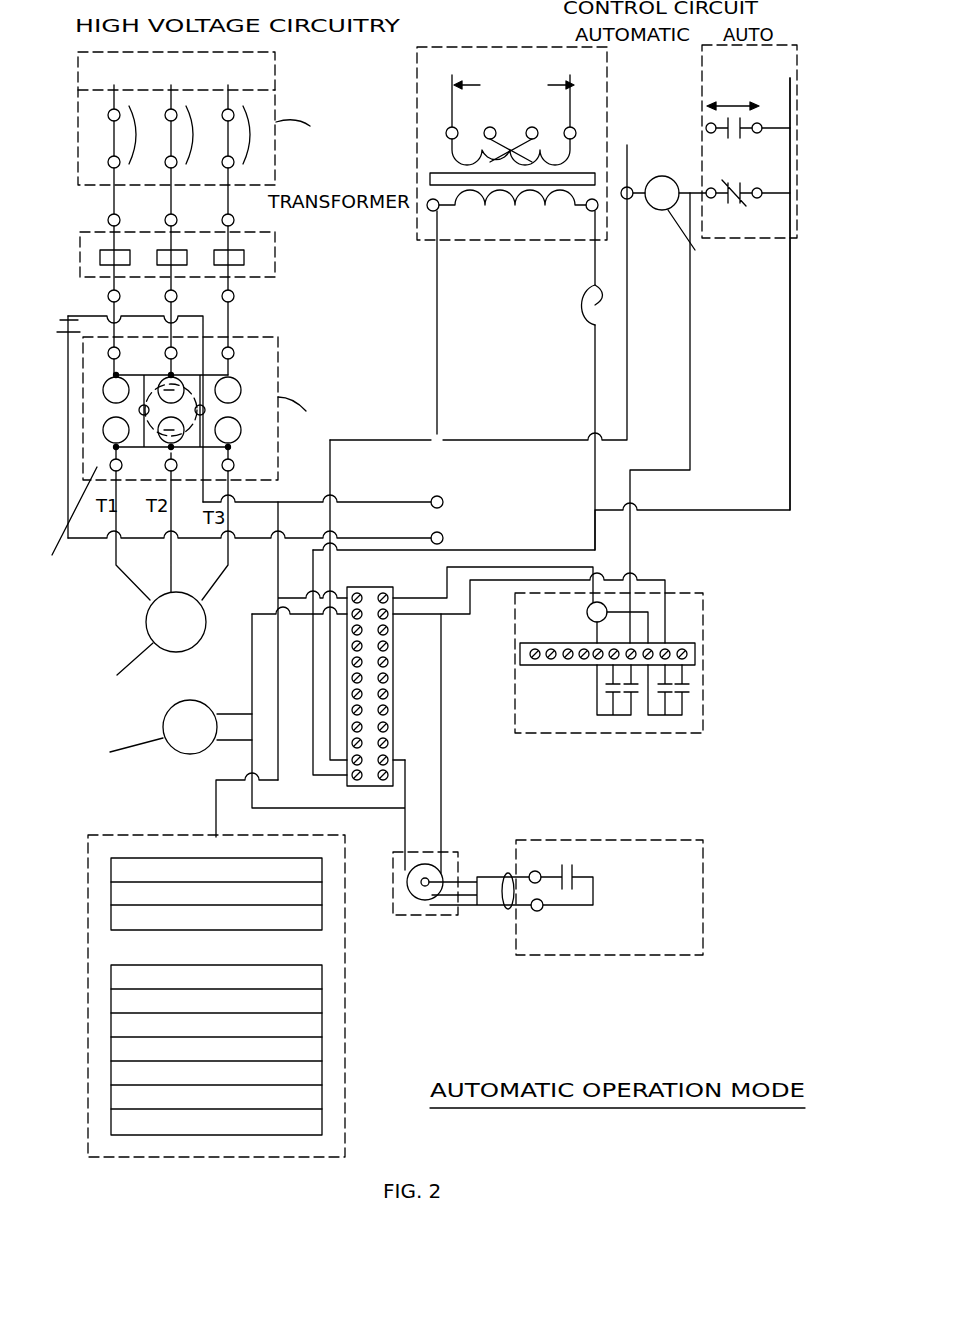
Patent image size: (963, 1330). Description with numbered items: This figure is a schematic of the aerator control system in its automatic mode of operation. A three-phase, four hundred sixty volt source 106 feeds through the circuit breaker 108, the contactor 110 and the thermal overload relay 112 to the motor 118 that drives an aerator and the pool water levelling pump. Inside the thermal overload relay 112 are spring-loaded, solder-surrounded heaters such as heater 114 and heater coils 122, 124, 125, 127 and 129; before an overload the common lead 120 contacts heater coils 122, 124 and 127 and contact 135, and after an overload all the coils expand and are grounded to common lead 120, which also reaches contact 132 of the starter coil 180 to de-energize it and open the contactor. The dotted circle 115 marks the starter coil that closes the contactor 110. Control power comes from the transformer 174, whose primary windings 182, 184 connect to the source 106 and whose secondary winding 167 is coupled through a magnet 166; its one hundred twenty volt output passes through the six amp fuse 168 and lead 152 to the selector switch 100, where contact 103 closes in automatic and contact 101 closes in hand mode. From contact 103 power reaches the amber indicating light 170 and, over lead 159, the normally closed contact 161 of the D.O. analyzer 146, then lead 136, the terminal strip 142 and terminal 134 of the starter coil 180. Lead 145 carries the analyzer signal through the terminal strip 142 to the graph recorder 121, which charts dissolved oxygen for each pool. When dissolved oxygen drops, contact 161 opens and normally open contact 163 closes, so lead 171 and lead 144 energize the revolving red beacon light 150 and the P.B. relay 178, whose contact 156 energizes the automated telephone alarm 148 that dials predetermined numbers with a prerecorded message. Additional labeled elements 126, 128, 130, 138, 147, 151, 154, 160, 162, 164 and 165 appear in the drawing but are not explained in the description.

The common selector switch 100 is at (702, 57).
The hand mode contact 101 is at (740, 136).
The automatic mode contact 103 is at (738, 200).
The 3 phase 460 volt source 106 is at (276, 74).
The circuit breaker 108 is at (276, 106).
The contactor 110 is at (276, 241).
The thermal overload relay 112 is at (245, 337).
The heater 114 is at (247, 378).
The starter coil 115 is at (186, 424).
The motor 118 is at (203, 638).
The common lead 120 is at (437, 352).
The graph recorder 121 is at (345, 1063).
The heater coil 122 is at (240, 458).
The heater coil 124 is at (134, 462).
The heater coil 125 is at (103, 392).
The relay connection 126 is at (114, 376).
The heater coil 127 is at (104, 434).
The relay connection 128 is at (170, 375).
The heater coil 129 is at (182, 383).
The thermal overload relay 130 is at (230, 375).
The starter coil contact 132 is at (138, 410).
The starter coil contact 134 is at (206, 410).
The overload relay contact 135 is at (116, 448).
The lead 136 is at (360, 507).
The conductor 138 is at (355, 543).
The terminal strip 142 is at (393, 686).
The lead 144 is at (510, 582).
The lead 145 is at (216, 793).
The D.O. analyzer 146 is at (703, 655).
The ground 147 is at (60, 321).
The alarm 148 is at (703, 866).
The revolving red beacon light 150 is at (219, 727).
The motor terminal 151 is at (246, 462).
The lead 152 is at (518, 538).
The alarm contact 154 is at (577, 868).
The NO contact 156 is at (491, 891).
The lead 159 is at (690, 405).
The alarm terminals 160 is at (508, 873).
The NC contact 161 is at (632, 682).
The transformer primary terminal 162 is at (450, 86).
The NO contact 163 is at (687, 692).
The transformer primary terminal 164 is at (572, 86).
The analyzer relay coil 165 is at (565, 645).
The magnet 166 is at (430, 182).
The secondary winding 167 is at (488, 208).
The 6 amp fuse 168 is at (598, 285).
The amber indicating light 170 is at (673, 160).
The lead 171 is at (648, 612).
The transformer 174 is at (497, 48).
The P.B. relay 178 is at (395, 890).
The starter coil 180 is at (159, 428).
The primary winding 182 is at (453, 162).
The primary winding 184 is at (568, 162).